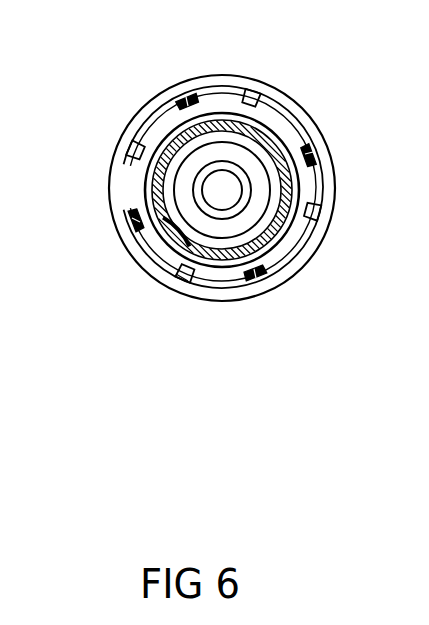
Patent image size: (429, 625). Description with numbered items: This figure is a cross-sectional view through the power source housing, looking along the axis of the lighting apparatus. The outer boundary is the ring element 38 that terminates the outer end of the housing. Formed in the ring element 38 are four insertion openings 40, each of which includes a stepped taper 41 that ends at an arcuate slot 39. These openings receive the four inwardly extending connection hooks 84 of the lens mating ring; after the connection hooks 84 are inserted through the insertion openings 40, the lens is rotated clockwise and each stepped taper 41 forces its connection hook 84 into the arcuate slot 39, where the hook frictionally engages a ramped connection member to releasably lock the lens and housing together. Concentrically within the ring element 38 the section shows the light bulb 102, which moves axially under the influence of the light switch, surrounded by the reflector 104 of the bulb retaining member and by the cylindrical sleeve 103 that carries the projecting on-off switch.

The ring element 38 is at (157, 96).
The arcuate slot 39 is at (145, 240).
The insertion openings 40 is at (258, 100).
The stepped taper 41 is at (170, 272).
The connection hooks 84 is at (132, 224).
The light bulb 102 is at (247, 175).
The cylindrical sleeve 103 is at (247, 163).
The reflector 104 is at (229, 188).